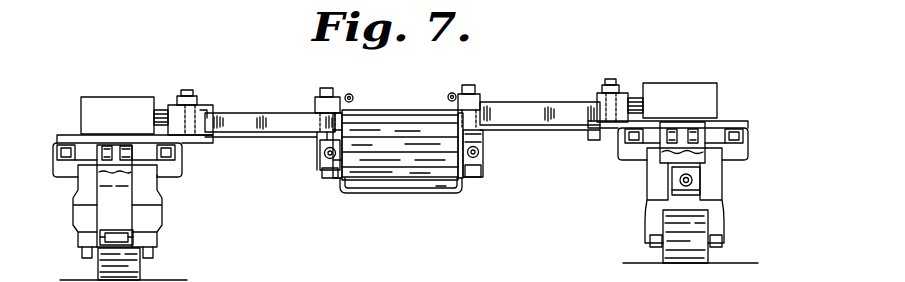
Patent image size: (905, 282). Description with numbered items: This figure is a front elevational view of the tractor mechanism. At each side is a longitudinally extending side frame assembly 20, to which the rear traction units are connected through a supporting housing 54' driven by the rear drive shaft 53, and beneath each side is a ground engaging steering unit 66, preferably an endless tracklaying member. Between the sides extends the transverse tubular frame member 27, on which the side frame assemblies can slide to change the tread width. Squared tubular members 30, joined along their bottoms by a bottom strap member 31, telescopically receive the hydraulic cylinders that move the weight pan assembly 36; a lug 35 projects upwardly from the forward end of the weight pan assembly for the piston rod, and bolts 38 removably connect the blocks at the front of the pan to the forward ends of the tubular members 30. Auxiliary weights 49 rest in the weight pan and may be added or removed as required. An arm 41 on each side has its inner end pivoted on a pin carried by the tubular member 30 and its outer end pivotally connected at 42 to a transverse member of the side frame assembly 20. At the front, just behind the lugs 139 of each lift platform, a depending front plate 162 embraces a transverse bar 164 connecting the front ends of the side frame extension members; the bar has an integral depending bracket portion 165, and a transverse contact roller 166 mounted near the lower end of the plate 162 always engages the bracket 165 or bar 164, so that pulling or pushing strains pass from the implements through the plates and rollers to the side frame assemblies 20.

The side frame assembly 20 is at (52, 164).
The transverse tubular frame member 27 is at (272, 140).
The tubular member 30 is at (321, 151).
The bottom strap member 31 is at (388, 193).
The lug 35 is at (323, 176).
The weight pan assembly 36 is at (437, 181).
The bolt 38 is at (328, 122).
The arm 41 is at (241, 121).
The pivotal connection 42 is at (188, 94).
The auxiliary weight 49 is at (418, 133).
The rear drive shaft 53 is at (161, 112).
The supporting housing 54' is at (405, 95).
The ground engaging steering unit 66 is at (135, 272).
The lug 139 is at (125, 146).
The front depending plate 162 is at (669, 150).
The transverse bar 164 is at (145, 163).
The depending bracket portion 165 is at (707, 160).
The transverse contact roller 166 is at (113, 236).